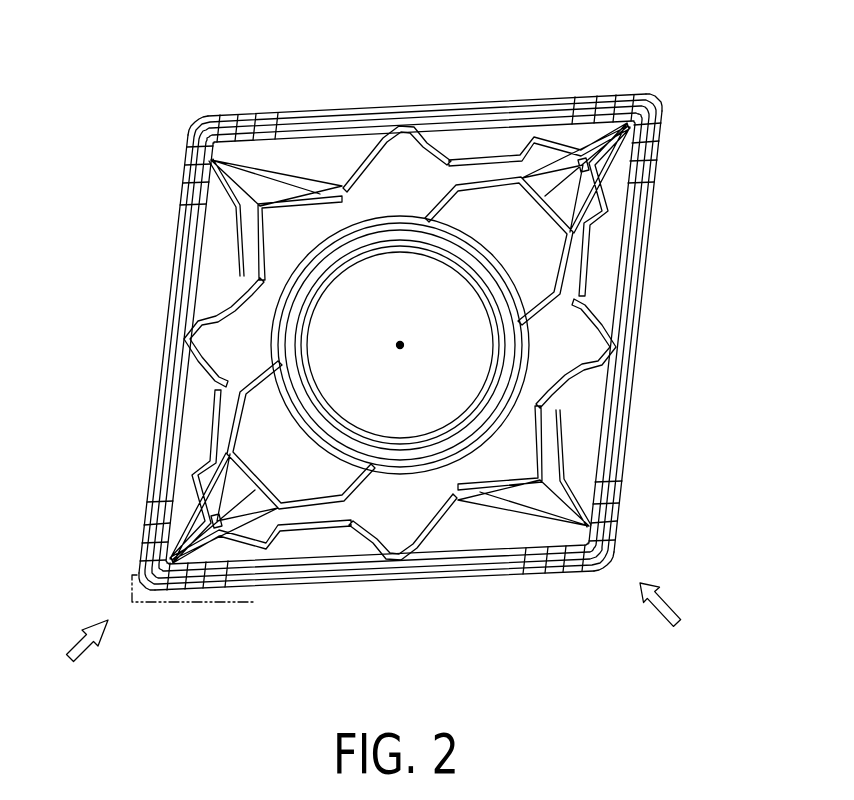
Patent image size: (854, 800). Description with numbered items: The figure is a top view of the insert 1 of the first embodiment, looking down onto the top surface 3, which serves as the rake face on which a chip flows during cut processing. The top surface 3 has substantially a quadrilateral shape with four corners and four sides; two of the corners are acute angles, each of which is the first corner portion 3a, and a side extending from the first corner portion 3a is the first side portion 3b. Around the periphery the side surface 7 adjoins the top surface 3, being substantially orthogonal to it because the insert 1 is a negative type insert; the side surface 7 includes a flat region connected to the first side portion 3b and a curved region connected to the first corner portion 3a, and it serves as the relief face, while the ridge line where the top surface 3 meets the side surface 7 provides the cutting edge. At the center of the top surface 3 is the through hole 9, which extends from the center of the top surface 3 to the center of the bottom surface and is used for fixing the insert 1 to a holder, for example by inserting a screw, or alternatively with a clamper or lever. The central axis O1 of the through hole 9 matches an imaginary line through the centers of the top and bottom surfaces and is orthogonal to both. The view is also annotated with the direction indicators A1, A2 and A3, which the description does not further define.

The insert 1 is at (250, 74).
The top surface 3 is at (200, 128).
The first corner portion 3a is at (652, 106).
The first side portion 3b is at (445, 103).
The side surface 7 is at (645, 318).
The through hole 9 is at (312, 362).
The central axis O1 is at (400, 345).
The viewing direction A1 is at (677, 618).
The viewing direction A2 is at (75, 653).
The viewing direction A3 is at (247, 607).